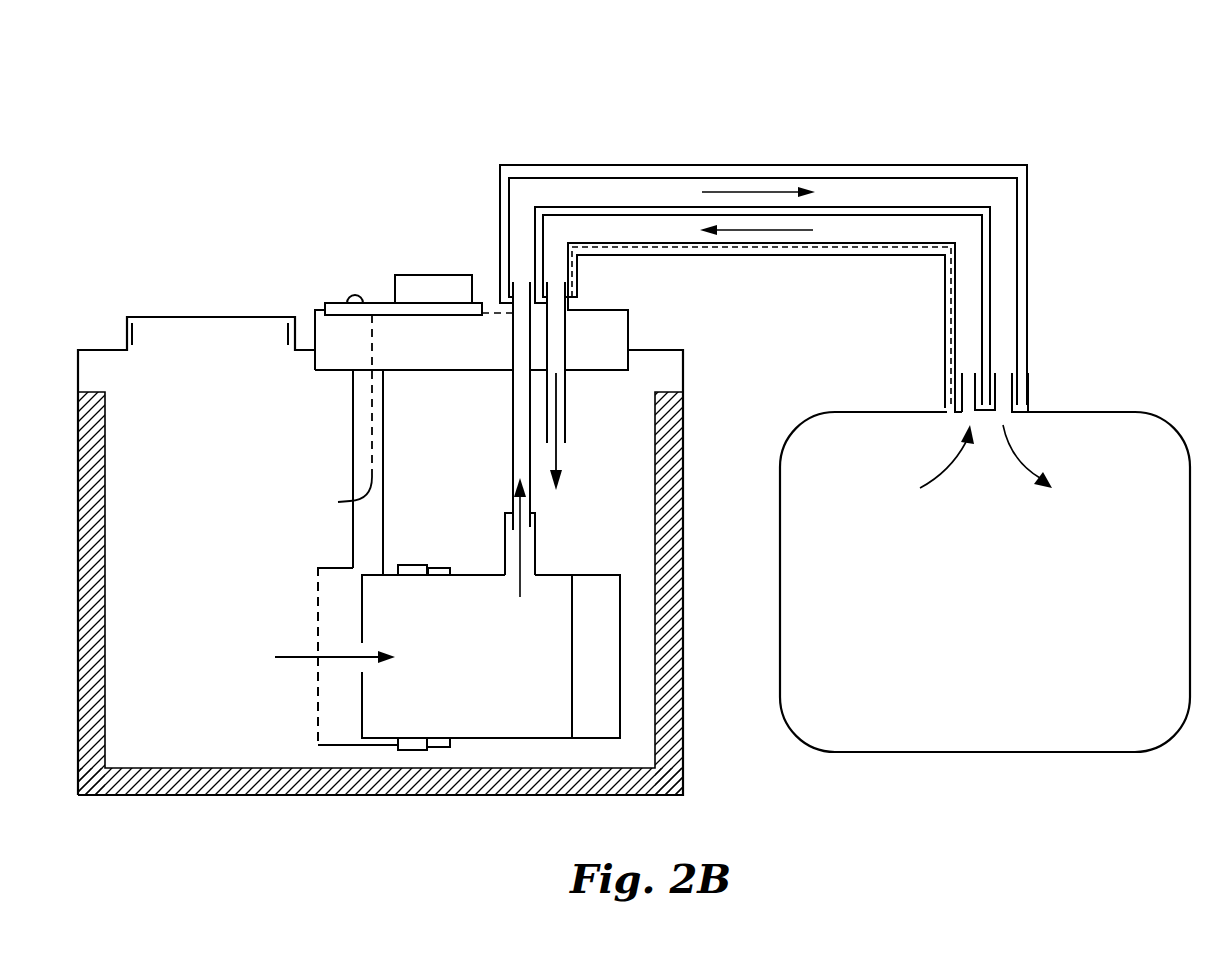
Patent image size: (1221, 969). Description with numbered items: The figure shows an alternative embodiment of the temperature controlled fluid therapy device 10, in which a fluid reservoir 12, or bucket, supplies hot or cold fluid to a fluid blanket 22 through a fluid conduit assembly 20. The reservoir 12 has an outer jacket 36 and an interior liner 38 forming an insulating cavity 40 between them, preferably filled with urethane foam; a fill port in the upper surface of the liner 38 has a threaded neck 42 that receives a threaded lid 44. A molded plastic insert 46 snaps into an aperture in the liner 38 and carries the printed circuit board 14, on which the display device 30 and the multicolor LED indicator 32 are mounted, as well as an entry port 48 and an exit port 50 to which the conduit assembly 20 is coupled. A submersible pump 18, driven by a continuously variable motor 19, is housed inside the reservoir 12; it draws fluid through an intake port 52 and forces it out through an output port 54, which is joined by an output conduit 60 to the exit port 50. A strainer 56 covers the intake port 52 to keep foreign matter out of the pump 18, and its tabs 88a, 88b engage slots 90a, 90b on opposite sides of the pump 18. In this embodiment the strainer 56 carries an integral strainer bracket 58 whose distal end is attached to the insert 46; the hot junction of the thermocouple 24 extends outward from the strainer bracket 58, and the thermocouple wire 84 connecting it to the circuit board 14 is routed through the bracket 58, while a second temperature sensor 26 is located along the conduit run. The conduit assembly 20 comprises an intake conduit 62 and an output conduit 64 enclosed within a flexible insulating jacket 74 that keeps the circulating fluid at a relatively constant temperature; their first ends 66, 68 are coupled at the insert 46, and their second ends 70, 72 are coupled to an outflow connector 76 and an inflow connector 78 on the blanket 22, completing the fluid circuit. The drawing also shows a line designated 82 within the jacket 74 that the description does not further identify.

The temperature controlled fluid therapy device 10 is at (266, 66).
The fluid reservoir 12 is at (208, 582).
The printed circuit board 14 is at (332, 304).
The submersible pump 18 is at (481, 665).
The continuously variable motor 19 is at (605, 667).
The fluid conduit assembly 20 is at (791, 150).
The fluid blanket 22 is at (974, 613).
The thermocouple 24 is at (341, 498).
The temperature sensor 26 is at (968, 357).
The display device 30 is at (408, 275).
The multicolor LED indicator 32 is at (352, 290).
The outer jacket 36 is at (683, 597).
The interior liner 38 is at (110, 549).
The cavity 40 is at (184, 362).
The threaded neck 42 is at (287, 338).
The threaded lid 44 is at (176, 316).
The insert 46 is at (431, 347).
The entry port 48 is at (566, 293).
The exit port 50 is at (510, 283).
The intake port 52 is at (340, 673).
The output port 54 is at (537, 543).
The strainer 56 is at (322, 565).
The strainer bracket 58 is at (385, 420).
The output conduit 60 is at (510, 435).
The intake conduit 62 is at (665, 235).
The output conduit 64 is at (600, 190).
The first end of intake conduit 66 is at (560, 265).
The first end of output conduit 68 is at (520, 267).
The second end of intake conduit 70 is at (955, 380).
The second end of output conduit 72 is at (1018, 383).
The flexible insulating jacket 74 is at (932, 165).
The outflow connector 76 is at (968, 390).
The inflow connector 78 is at (1005, 392).
The sensor conduit 82 is at (797, 247).
The thermocouple wire 84 is at (372, 412).
The tab 88a is at (441, 567).
The tab 88b is at (438, 748).
The slot 90a is at (411, 565).
The slot 90b is at (407, 750).